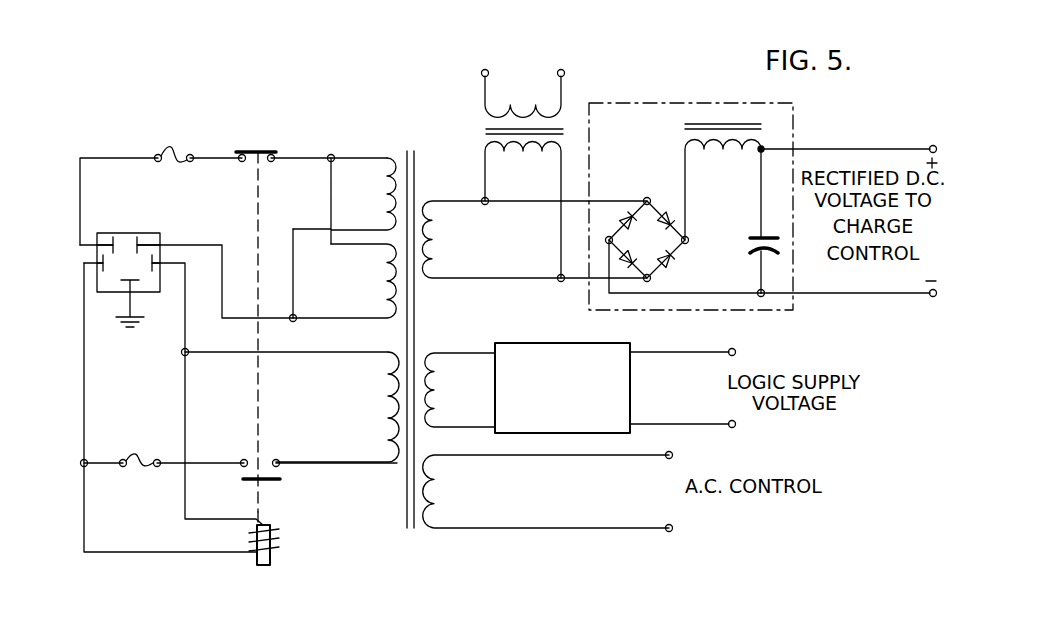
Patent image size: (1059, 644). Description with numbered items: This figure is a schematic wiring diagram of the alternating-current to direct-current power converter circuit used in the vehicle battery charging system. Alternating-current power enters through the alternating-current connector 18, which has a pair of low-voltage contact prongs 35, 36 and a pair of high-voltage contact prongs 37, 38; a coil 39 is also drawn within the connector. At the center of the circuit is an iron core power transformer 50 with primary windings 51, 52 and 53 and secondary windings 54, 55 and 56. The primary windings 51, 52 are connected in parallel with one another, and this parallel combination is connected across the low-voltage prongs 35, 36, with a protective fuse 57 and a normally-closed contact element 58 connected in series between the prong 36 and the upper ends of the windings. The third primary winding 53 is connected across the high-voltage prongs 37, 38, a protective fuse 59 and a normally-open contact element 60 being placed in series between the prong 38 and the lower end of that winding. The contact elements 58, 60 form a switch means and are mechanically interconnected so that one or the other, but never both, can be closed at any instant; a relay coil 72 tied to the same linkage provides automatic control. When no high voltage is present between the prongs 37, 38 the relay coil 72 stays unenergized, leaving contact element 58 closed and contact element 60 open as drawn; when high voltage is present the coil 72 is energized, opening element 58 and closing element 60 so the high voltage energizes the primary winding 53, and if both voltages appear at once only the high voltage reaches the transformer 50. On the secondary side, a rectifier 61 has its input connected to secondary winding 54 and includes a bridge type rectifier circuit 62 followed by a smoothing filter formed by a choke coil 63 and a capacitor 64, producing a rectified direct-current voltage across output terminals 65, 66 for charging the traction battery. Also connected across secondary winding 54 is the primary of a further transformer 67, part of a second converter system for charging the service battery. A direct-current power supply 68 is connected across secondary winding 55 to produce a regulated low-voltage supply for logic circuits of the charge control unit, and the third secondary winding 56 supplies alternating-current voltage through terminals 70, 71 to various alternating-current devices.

The alternating-current connector 18 is at (122, 251).
The low-voltage contact prong 35 is at (140, 235).
The low-voltage contact prong 36 is at (118, 235).
The high-voltage contact prong 37 is at (158, 249).
The high-voltage contact prong 38 is at (95, 262).
The relay coil 39 is at (140, 282).
The power transformer 50 is at (398, 121).
The primary winding 51 is at (386, 202).
The primary winding 52 is at (386, 296).
The primary winding 53 is at (388, 388).
The secondary winding 54 is at (432, 262).
The secondary winding 55 is at (434, 412).
The secondary winding 56 is at (434, 500).
The protective fuse 57 is at (171, 150).
The normally-closed contact element 58 is at (276, 151).
The protective fuse 59 is at (141, 456).
The normally-open contact element 60 is at (278, 481).
The rectifier 61 is at (666, 103).
The bridge type rectifier circuit 62 is at (663, 241).
The choke coil 63 is at (717, 150).
The capacitor 64 is at (750, 245).
The rectifier output terminal 65 is at (931, 146).
The rectifier output terminal 66 is at (931, 297).
The further transformer 67 is at (482, 131).
The direct-current power supply 68 is at (549, 343).
The terminal 70 is at (667, 458).
The terminal 71 is at (668, 524).
The relay coil 72 is at (279, 545).